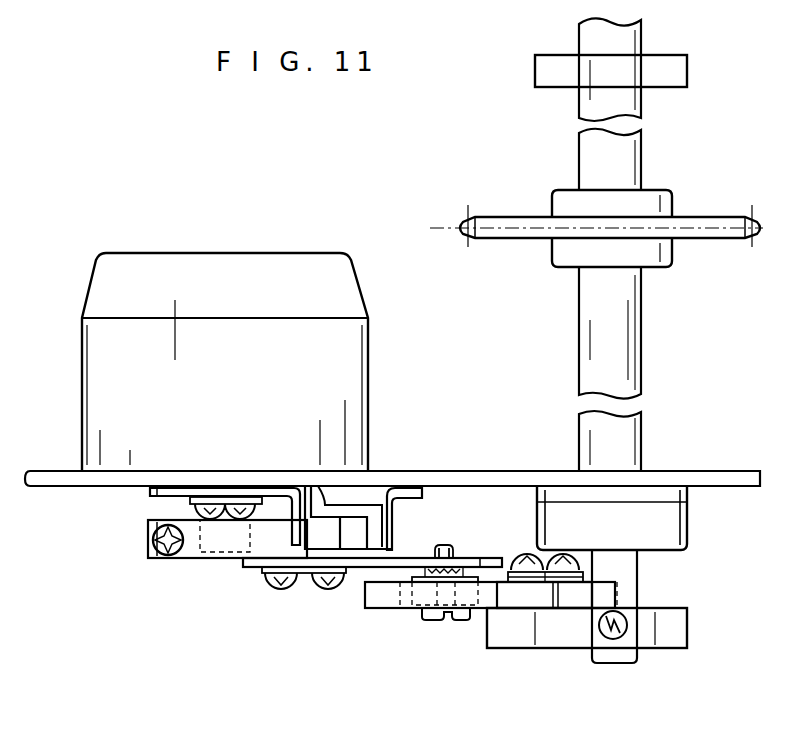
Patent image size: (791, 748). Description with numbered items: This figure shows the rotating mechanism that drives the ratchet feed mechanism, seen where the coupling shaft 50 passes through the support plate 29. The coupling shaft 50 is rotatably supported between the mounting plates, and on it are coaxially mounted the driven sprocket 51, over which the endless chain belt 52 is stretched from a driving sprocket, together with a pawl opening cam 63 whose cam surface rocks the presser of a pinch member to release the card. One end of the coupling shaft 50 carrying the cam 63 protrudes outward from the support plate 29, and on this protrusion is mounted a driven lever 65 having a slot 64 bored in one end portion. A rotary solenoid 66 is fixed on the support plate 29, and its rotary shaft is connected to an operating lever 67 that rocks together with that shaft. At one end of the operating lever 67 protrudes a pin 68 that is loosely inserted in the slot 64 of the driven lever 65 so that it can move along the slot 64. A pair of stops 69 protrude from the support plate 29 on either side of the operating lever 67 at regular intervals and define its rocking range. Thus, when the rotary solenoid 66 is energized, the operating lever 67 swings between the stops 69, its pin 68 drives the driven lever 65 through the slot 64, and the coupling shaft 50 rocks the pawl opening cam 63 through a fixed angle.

The mounting plate 29 is at (697, 471).
The coupling shaft 50 is at (643, 348).
The driven sprocket 51 is at (729, 240).
The chain belt 52 is at (433, 228).
The pawl opening cam 63 is at (687, 56).
The slot 64 is at (400, 608).
The driven lever 65 is at (517, 648).
The rotary solenoid 66 is at (368, 372).
The operating lever 67 is at (255, 568).
The pin 68 is at (465, 618).
The stop 69 is at (393, 516).